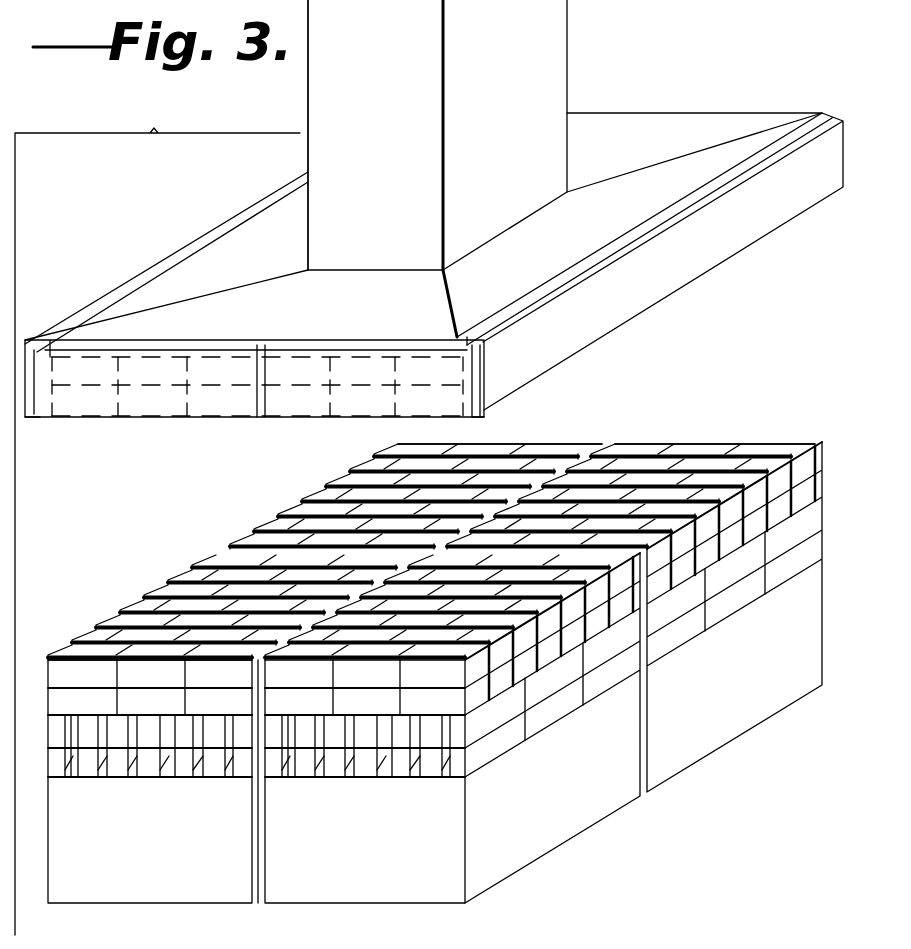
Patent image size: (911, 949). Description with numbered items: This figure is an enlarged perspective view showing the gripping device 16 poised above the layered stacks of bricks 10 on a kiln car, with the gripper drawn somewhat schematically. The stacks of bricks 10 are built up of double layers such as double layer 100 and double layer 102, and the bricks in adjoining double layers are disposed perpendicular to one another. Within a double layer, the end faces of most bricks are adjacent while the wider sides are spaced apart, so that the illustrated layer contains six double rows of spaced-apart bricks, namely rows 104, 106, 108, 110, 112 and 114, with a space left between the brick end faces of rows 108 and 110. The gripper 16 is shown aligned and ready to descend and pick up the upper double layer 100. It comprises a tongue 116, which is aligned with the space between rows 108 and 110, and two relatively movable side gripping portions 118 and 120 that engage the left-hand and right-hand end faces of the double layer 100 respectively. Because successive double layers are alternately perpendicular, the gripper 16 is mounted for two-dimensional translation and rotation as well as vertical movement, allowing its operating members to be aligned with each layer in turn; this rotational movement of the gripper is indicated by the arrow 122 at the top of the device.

The layered stacks of bricks 10 is at (143, 563).
The gripping device 16 is at (122, 213).
The double layer 100 is at (44, 717).
The double layer 102 is at (44, 717).
The row 104 is at (528, 425).
The row 106 is at (541, 434).
The row 108 is at (601, 434).
The row 110 is at (671, 438).
The row 112 is at (734, 437).
The row 114 is at (827, 417).
The tongue 116 is at (363, 353).
The side gripping portion 118 is at (130, 350).
The side gripping portion 120 is at (627, 317).
The arrow 122 is at (283, 83).